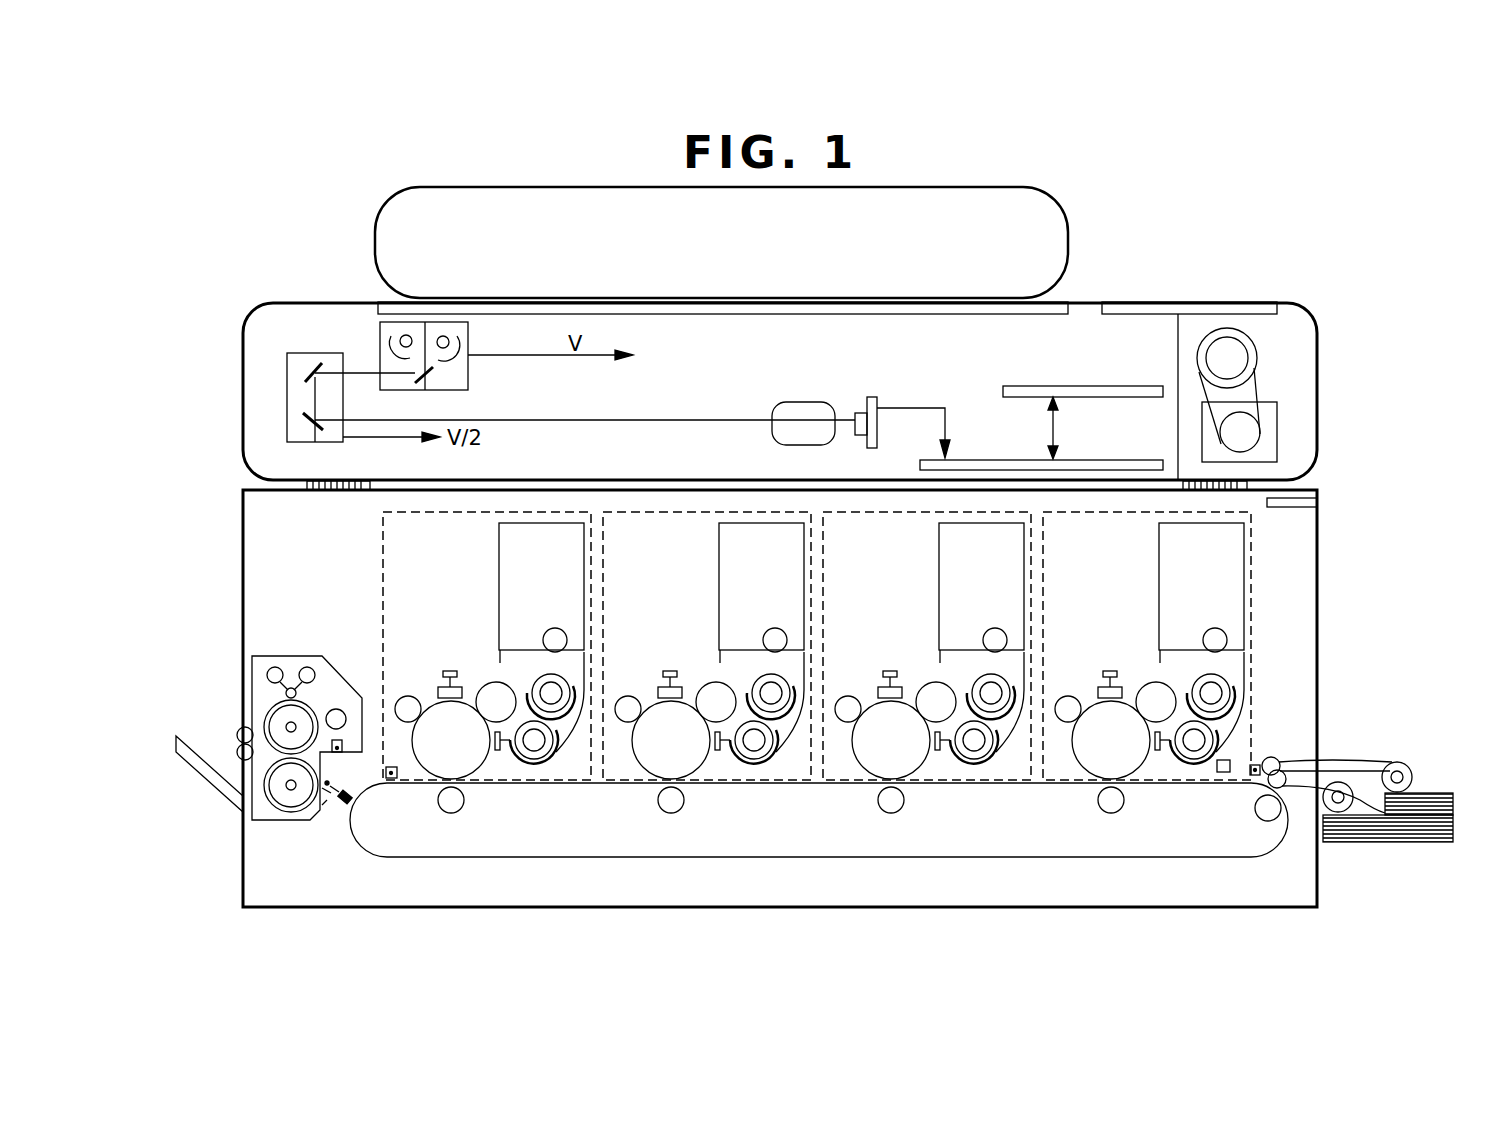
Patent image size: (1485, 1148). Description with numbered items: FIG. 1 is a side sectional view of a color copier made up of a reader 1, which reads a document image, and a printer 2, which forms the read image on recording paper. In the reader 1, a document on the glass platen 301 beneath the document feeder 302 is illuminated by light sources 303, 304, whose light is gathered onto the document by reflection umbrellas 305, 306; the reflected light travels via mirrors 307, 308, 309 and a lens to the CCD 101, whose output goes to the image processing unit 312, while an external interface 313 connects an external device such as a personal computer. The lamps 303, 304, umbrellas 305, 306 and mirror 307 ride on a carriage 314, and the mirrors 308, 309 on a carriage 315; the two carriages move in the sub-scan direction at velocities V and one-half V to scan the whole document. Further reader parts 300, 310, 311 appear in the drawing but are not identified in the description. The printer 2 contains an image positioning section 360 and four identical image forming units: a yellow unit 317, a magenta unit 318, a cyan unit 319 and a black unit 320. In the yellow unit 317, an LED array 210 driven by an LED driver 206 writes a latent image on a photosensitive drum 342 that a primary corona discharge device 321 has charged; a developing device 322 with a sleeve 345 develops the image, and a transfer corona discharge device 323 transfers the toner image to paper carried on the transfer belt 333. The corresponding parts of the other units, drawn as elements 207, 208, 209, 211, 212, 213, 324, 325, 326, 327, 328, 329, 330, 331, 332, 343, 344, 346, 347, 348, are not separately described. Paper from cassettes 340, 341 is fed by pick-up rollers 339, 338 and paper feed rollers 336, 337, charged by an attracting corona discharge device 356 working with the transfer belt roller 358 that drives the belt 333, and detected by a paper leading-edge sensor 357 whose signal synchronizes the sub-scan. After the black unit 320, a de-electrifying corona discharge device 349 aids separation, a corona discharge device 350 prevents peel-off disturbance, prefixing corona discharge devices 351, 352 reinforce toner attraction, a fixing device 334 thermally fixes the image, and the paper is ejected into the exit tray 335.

The reader 1 is at (1322, 371).
The printer 2 is at (1322, 597).
The CCD 101 is at (858, 412).
The LED driver 206 is at (1092, 646).
The charger 207 is at (872, 646).
The charger 208 is at (652, 646).
The charger 209 is at (440, 670).
The LED array 210 is at (1126, 665).
The charging device 211 is at (906, 665).
The charging device 212 is at (686, 665).
The charging device 213 is at (462, 686).
The platen cover plate 300 is at (1178, 302).
The glass platen 301 is at (378, 300).
The document feeder 302 is at (376, 243).
The light source 303 is at (458, 354).
The light source 304 is at (396, 322).
The reflection umbrella 305 is at (462, 342).
The reflection umbrella 306 is at (398, 344).
The mirror 307 is at (437, 383).
The mirror 308 is at (303, 368).
The mirror 309 is at (305, 420).
The imaging lens 310 is at (795, 402).
The CCD sensor 311 is at (877, 400).
The image processing unit 312 is at (1092, 460).
The external interface 313 is at (1050, 386).
The carriage 314 is at (468, 390).
The carriage 315 is at (287, 395).
The yellow image forming unit 317 is at (1147, 646).
The magenta image forming unit 318 is at (927, 646).
The cyan image forming unit 319 is at (707, 646).
The black image forming unit 320 is at (430, 542).
The primary corona discharge device 321 is at (1070, 690).
The developing device 322 is at (1201, 593).
The transfer corona discharge device 323 is at (1135, 814).
The cleaning roller 324 is at (850, 690).
The toner container 325 is at (981, 593).
The transfer roller 326 is at (915, 814).
The cleaning roller 327 is at (630, 690).
The toner container 328 is at (761, 593).
The transfer roller 329 is at (695, 814).
The cleaning roller 330 is at (410, 703).
The toner container 331 is at (565, 566).
The transfer roller 332 is at (460, 812).
The transfer belt 333 is at (352, 843).
The fixing device 334 is at (290, 665).
The exit tray 335 is at (220, 748).
The paper feed roller 336 is at (1274, 757).
The paper feed roller 337 is at (1283, 790).
The pick-up roller 338 is at (1340, 800).
The pick-up roller 339 is at (1397, 762).
The cassette 340 is at (1415, 843).
The cassette 341 is at (1440, 793).
The photosensitive drum 342 is at (1111, 740).
The photosensitive drum 343 is at (891, 740).
The photosensitive drum 344 is at (671, 740).
The sleeve 345 is at (470, 752).
The developing roller 346 is at (956, 663).
The developing roller 347 is at (736, 663).
The developing roller 348 is at (504, 688).
The de-electrifying corona discharge device 349 is at (392, 779).
The corona discharge device 350 is at (348, 793).
The prefixing corona discharge device 351 is at (337, 740).
The prefixing corona discharge device 352 is at (327, 804).
The attracting corona discharge device 356 is at (1256, 764).
The paper leading-edge sensor 357 is at (1222, 773).
The transfer belt roller 358 is at (1262, 812).
The image positioning section 360 is at (1318, 500).